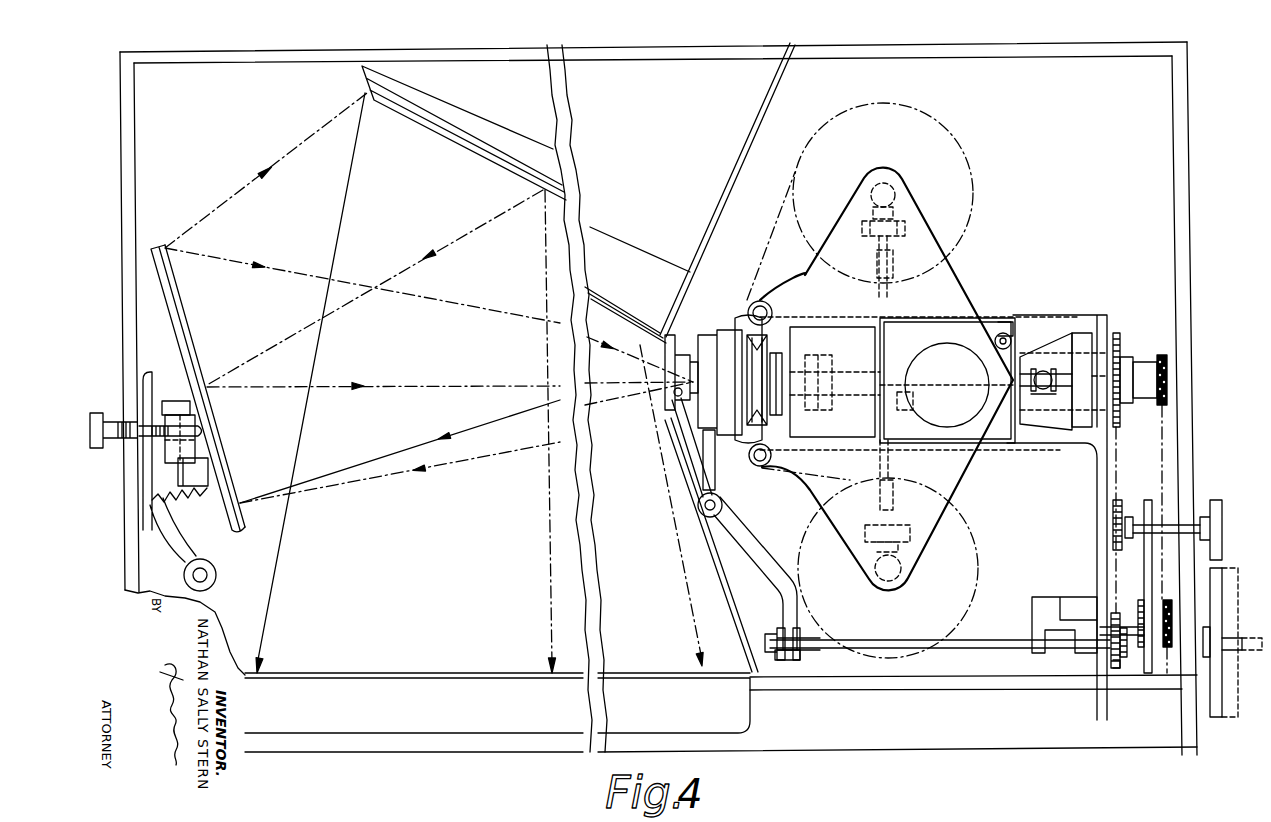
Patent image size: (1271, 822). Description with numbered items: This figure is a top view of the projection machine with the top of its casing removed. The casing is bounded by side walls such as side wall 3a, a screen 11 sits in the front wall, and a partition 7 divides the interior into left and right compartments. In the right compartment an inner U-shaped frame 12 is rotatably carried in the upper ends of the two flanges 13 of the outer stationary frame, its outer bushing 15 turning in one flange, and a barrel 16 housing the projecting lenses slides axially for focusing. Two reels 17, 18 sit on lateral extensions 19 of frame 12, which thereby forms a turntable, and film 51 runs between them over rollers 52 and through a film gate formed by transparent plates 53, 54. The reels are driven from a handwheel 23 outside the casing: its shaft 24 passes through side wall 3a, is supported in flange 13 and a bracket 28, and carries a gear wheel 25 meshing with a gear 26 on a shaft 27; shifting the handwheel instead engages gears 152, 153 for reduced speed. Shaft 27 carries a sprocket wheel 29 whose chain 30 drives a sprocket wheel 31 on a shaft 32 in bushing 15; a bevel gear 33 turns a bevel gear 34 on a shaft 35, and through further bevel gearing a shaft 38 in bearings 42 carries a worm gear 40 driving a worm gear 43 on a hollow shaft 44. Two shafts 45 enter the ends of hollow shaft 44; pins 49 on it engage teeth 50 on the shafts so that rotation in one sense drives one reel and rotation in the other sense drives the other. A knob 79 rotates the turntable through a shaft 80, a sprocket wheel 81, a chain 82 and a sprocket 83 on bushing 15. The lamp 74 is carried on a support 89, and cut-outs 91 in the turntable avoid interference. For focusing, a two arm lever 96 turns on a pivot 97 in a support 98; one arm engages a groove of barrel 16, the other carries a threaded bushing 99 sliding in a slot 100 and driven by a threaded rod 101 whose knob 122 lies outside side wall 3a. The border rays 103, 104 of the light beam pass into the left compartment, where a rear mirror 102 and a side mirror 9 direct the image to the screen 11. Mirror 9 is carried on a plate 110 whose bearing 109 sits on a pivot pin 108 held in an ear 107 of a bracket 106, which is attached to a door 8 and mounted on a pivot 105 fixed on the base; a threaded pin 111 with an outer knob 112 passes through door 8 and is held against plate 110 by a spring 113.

The side wall 3a is at (1198, 452).
The partition 7 is at (720, 204).
The door 8 is at (139, 321).
The side mirror 9 is at (195, 350).
The screen 11 is at (407, 681).
The inner U-shaped frame 12 is at (972, 466).
The flanges 13 is at (707, 330).
The outer bushing 15 is at (1127, 356).
The lens barrel 16 is at (671, 356).
The reel 17 is at (978, 575).
The reel 18 is at (974, 200).
The lateral extensions 19 is at (905, 200).
The handwheel 23 is at (1224, 572).
The shaft 24 is at (1172, 660).
The gear wheel 25 is at (1110, 652).
The gear 26 is at (1115, 613).
The shaft 27 is at (1140, 600).
The bracket 28 is at (1146, 541).
The sprocket wheel 29 is at (1167, 648).
The chain 30 is at (1166, 426).
The sprocket wheel 31 is at (1168, 373).
The shaft 32 is at (1148, 360).
The bevel gear 33 is at (1049, 370).
The bevel gear 34 is at (1036, 357).
The shaft 35 is at (1041, 392).
The shaft 38 is at (998, 388).
The worm gear 40 is at (938, 370).
The bearings 42 is at (830, 398).
The worm gear 43 is at (913, 405).
The hollow shaft 44 is at (891, 468).
The shafts 45 is at (898, 243).
The pins 49 is at (893, 276).
The teeth 50 is at (882, 248).
The film 51 is at (776, 232).
The rollers 52 is at (772, 308).
The transparent plate 53 is at (745, 318).
The transparent plate 54 is at (768, 338).
The lamp 74 is at (932, 337).
The knob 79 is at (1222, 510).
The shaft 80 is at (1173, 521).
The sprocket wheel 81 is at (1128, 516).
The chain 82 is at (1118, 470).
The sprocket 83 is at (1121, 408).
The support 89 is at (1004, 321).
The cut-outs 91 is at (1012, 338).
The two arm lever 96 is at (690, 471).
The pivot 97 is at (698, 513).
The support 98 is at (716, 462).
The bushing 99 is at (778, 633).
The slot 100 is at (797, 657).
The rod 101 is at (968, 650).
The rear mirror 102 is at (459, 140).
The border rays 103 is at (268, 173).
The border rays 104 is at (468, 427).
The pivot 105 is at (216, 572).
The bracket 106 is at (181, 543).
The ear 107 is at (210, 470).
The pivot pin 108 is at (197, 441).
The bearing 109 is at (192, 414).
The plate 110 is at (178, 318).
The threaded pin 111 is at (140, 417).
The knob 112 is at (96, 412).
The spring 113 is at (209, 500).
The knob 122 is at (1212, 634).
The gear 152 is at (1120, 668).
The gear 153 is at (1127, 648).